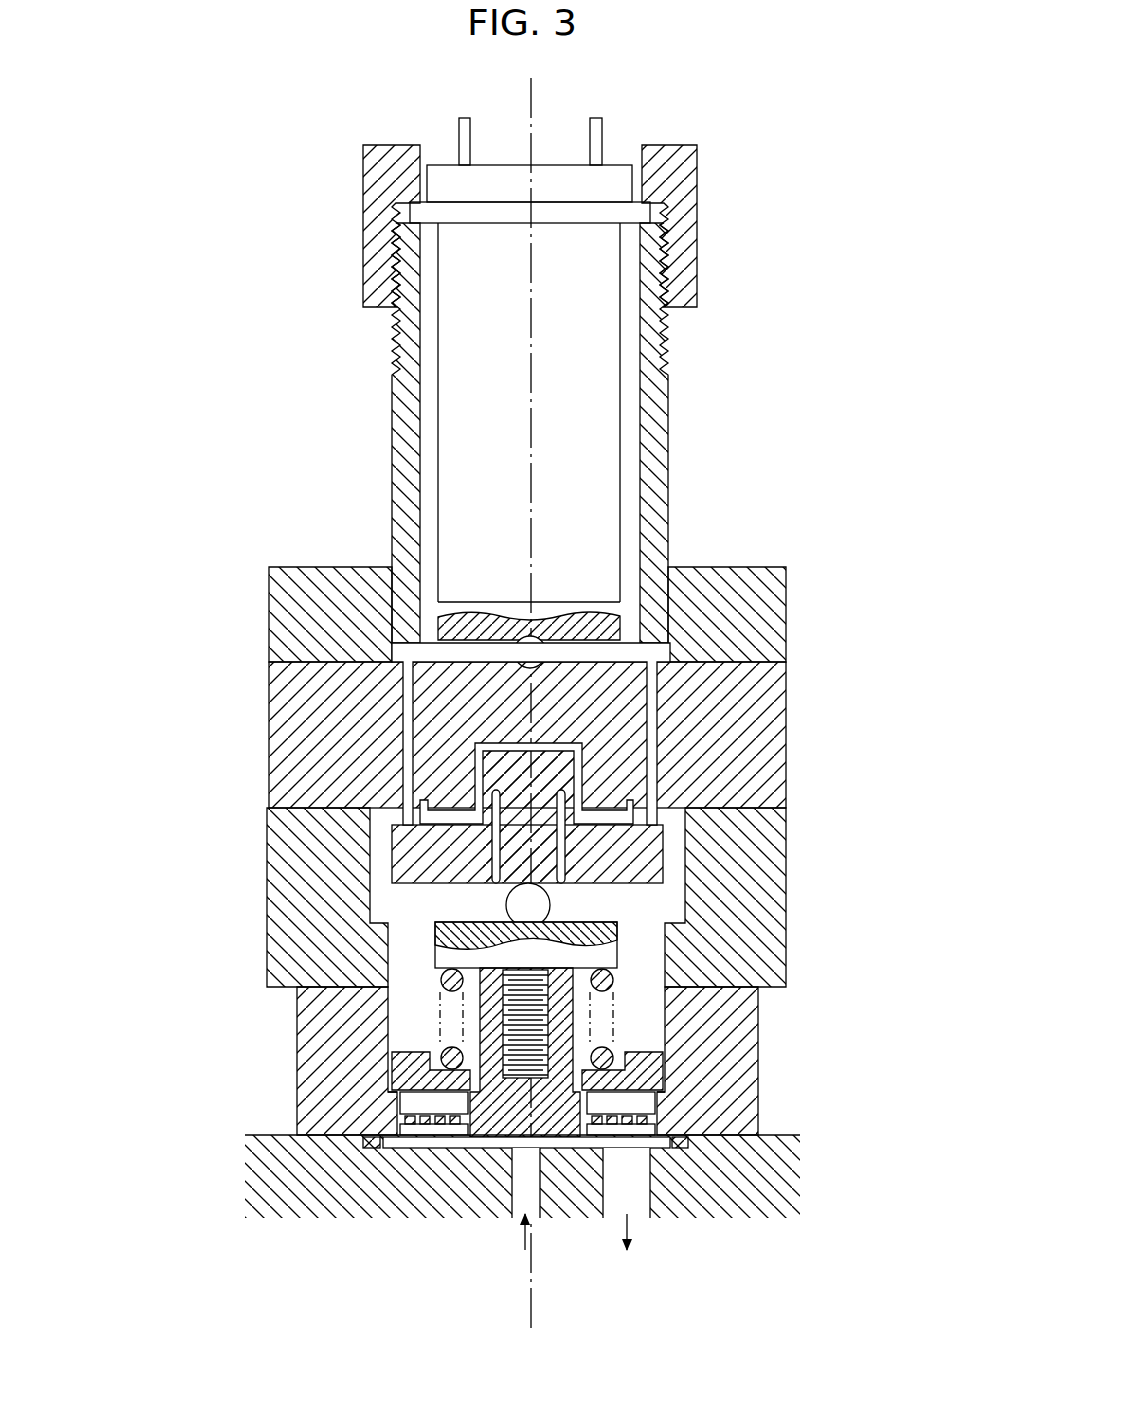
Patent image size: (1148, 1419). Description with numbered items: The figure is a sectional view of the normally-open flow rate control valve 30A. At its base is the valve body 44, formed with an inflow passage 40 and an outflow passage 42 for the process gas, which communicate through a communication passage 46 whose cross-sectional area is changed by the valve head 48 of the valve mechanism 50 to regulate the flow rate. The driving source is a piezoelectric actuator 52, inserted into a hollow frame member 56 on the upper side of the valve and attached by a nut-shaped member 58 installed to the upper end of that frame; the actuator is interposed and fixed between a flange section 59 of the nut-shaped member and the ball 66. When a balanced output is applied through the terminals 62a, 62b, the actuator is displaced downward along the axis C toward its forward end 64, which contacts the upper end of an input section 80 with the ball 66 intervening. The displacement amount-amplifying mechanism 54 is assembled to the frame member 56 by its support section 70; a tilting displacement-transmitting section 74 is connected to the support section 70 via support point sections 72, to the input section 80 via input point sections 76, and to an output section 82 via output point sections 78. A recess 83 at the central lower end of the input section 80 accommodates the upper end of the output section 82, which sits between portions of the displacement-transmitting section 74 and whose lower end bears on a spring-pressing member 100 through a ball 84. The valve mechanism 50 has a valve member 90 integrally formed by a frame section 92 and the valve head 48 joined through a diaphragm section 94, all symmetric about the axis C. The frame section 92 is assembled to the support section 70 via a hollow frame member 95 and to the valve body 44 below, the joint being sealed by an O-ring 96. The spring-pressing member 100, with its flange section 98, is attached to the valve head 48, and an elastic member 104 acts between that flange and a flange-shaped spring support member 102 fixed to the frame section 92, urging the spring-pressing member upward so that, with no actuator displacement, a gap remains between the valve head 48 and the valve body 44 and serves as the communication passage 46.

The flow rate control valve 30A is at (404, 93).
The inflow passage 40 is at (512, 1190).
The outflow passage 42 is at (603, 1190).
The valve body 44 is at (783, 1133).
The communication passage 46 is at (650, 1150).
The valve head 48 is at (395, 1150).
The valve mechanism 50 is at (623, 1026).
The piezoelectric actuator 52 is at (608, 422).
The displacement amount-amplifying mechanism 54 is at (558, 752).
The frame member 56 is at (665, 435).
The nut-shaped member 58 is at (700, 240).
The flange section 59 is at (662, 148).
The terminal 62a is at (463, 118).
The terminal 62b is at (596, 118).
The forward end 64 is at (665, 575).
The ball 66 is at (518, 640).
The support section 70 is at (775, 752).
The support point section 72 is at (690, 812).
The displacement-transmitting section 74 is at (655, 845).
The input point section 76 is at (615, 868).
The output point section 78 is at (585, 795).
The input section 80 is at (605, 648).
The output section 82 is at (530, 850).
The recess 83 is at (455, 770).
The ball 84 is at (512, 903).
The valve member 90 is at (572, 1061).
The frame section 92 is at (745, 1052).
The diaphragm section 94 is at (415, 1095).
The frame member 95 is at (440, 960).
The O-ring 96 is at (440, 1138).
The flange section 98 is at (445, 1000).
The spring-pressing member 100 is at (431, 929).
The spring support member 102 is at (650, 1068).
The elastic member 104 is at (445, 1040).
The axis C is at (545, 292).